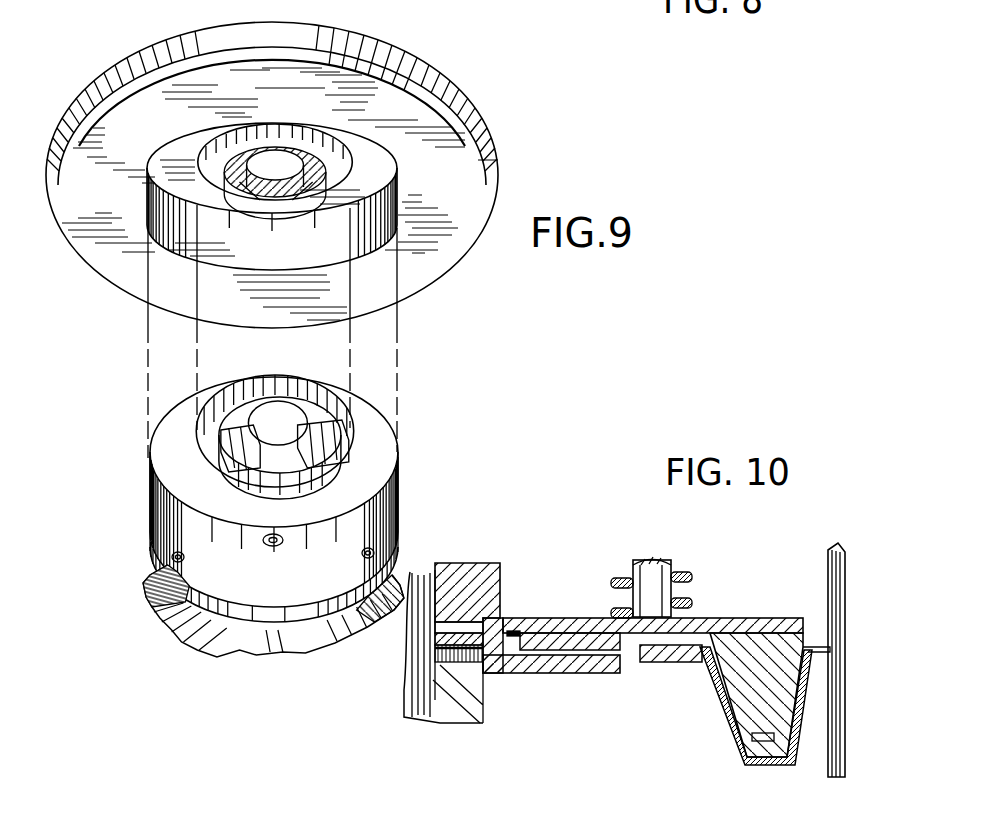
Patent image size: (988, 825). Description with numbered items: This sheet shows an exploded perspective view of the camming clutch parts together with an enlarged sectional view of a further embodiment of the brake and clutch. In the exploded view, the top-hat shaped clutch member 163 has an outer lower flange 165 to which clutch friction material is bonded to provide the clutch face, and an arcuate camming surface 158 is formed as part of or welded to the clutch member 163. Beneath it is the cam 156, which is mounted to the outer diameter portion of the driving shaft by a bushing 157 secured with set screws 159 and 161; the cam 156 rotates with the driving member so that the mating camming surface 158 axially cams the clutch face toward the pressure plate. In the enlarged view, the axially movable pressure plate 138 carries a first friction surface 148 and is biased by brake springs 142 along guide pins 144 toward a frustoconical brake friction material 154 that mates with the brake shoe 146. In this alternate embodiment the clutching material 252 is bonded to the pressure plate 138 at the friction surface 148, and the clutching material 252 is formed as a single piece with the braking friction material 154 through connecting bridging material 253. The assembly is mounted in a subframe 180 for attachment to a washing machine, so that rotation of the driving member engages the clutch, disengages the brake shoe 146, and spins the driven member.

In FIG. 10, the pressure plate 138 is at (743, 617).
In FIG. 10, the brake springs 142 is at (690, 572).
In FIG. 10, the guide pins 144 is at (645, 565).
In FIG. 10, the brake shoe 146 is at (798, 745).
In FIG. 10, the first friction surface 148 is at (543, 637).
In FIG. 10, the brake friction material 154 is at (748, 688).
In FIG. 9, the cam 156 is at (168, 492).
In FIG. 9, the bushing 157 is at (398, 508).
In FIG. 10, the bushing 157 is at (475, 702).
In FIG. 9, the camming surface 158 is at (374, 152).
In FIG. 9, the set screw 159 is at (163, 560).
In FIG. 9, the set screw 161 is at (280, 540).
In FIG. 10, the set screw 161 is at (437, 640).
In FIG. 9, the top-hat shaped clutch member 163 is at (388, 56).
In FIG. 9, the outer lower flange 165 is at (108, 118).
In FIG. 10, the outer lower flange 165 is at (512, 672).
In FIG. 10, the subframe 180 is at (845, 712).
In FIG. 10, the clutching material 252 is at (573, 645).
In FIG. 10, the connecting bridging material 253 is at (633, 648).